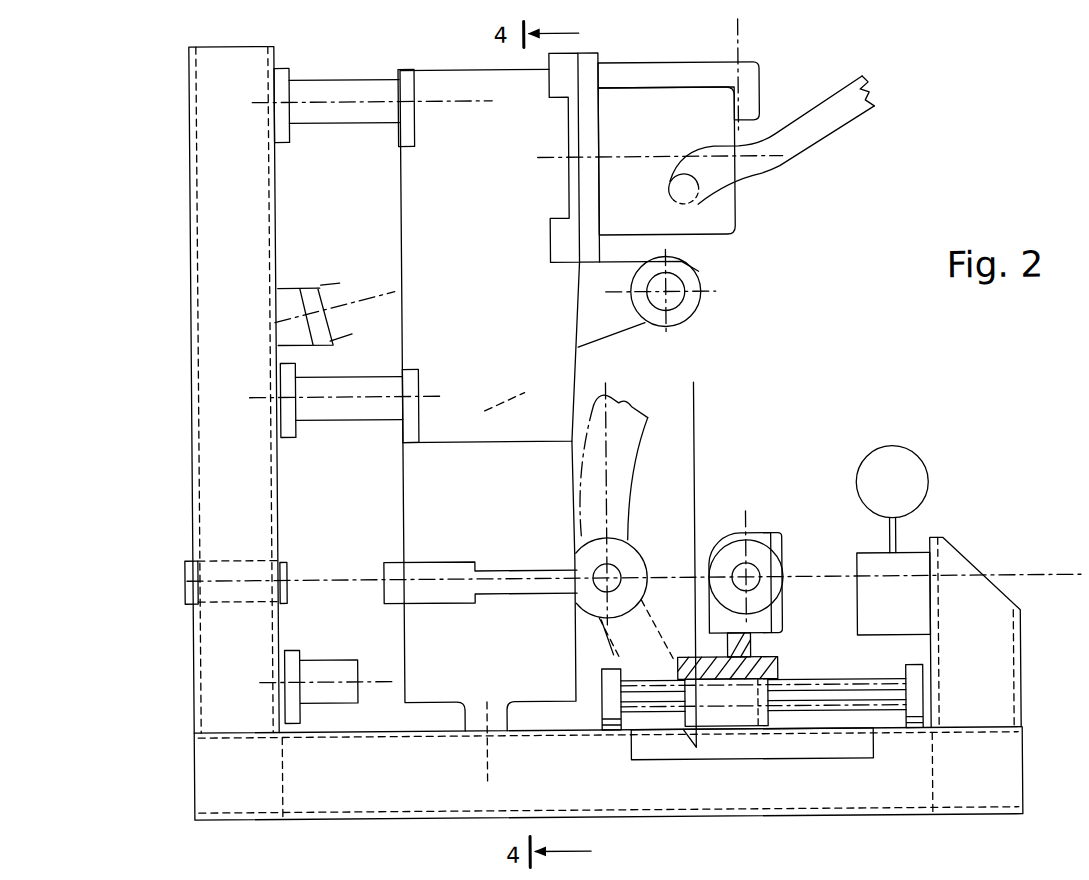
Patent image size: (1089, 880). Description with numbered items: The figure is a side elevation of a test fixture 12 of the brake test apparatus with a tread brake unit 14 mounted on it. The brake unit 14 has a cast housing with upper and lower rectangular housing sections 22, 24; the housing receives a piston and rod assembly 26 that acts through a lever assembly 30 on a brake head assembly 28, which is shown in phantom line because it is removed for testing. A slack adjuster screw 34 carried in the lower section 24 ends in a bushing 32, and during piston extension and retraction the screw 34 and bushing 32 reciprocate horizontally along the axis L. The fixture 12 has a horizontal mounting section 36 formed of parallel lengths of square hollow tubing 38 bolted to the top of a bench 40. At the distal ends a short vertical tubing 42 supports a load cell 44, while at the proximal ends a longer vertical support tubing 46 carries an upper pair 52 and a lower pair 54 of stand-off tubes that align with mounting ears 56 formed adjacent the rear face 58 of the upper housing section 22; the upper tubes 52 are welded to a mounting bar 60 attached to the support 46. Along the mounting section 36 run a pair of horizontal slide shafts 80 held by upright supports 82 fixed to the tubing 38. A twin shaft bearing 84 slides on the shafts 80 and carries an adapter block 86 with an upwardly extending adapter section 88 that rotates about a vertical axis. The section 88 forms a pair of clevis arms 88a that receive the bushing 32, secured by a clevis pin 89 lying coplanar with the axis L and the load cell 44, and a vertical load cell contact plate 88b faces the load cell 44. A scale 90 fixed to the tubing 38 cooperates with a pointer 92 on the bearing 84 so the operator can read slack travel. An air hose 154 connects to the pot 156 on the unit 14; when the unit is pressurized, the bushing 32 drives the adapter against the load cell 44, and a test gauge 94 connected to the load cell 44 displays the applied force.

The test fixture 12 is at (312, 597).
The tread brake unit 14 is at (670, 349).
The upper rectangular housing section 22 is at (470, 230).
The lower rectangular housing section 24 is at (437, 503).
The piston and rod assembly 26 is at (750, 218).
The brake head assembly 28 is at (628, 433).
The lever assembly 30 is at (520, 394).
The bushing 32 is at (588, 600).
The slack adjuster screw 34 is at (426, 568).
The horizontal mounting section 36 is at (382, 791).
The square hollow tubing 38 is at (513, 795).
The bench 40 is at (1010, 777).
The vertical square hollow tubing 42 is at (1000, 659).
The load cell 44 is at (917, 558).
The vertical support tubing 46 is at (232, 498).
The upper stand-off tubes 52 is at (383, 118).
The lower stand-off tubes 54 is at (362, 385).
The mounting ears 56 is at (418, 130).
The rear face 58 is at (405, 294).
The mounting bar 60 is at (285, 136).
The horizontal slide shafts 80 is at (827, 700).
The upright supports 82 is at (600, 707).
The twin shaft bearing 84 is at (717, 707).
The adapter block 86 is at (778, 669).
The adapter section 88 is at (728, 540).
The clevis arms 88a is at (708, 600).
The load cell contact plate 88b is at (776, 568).
The clevis pin 89 is at (772, 545).
The scale 90 is at (862, 743).
The pointer 92 is at (680, 718).
The test gauge 94 is at (903, 467).
The air hose 154 is at (840, 108).
The pot 156 is at (670, 188).
The axis L is at (460, 585).